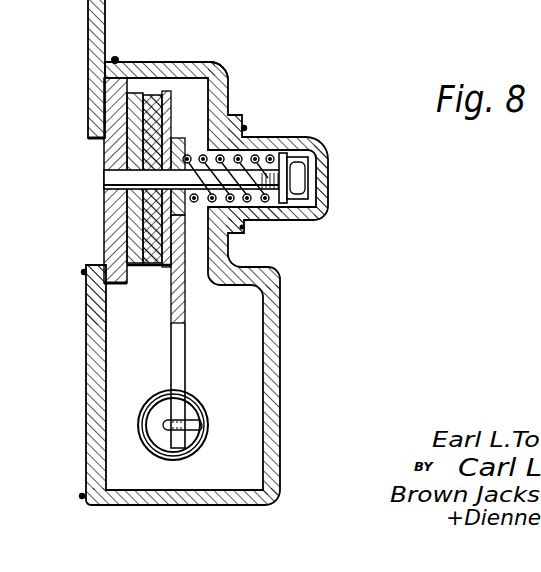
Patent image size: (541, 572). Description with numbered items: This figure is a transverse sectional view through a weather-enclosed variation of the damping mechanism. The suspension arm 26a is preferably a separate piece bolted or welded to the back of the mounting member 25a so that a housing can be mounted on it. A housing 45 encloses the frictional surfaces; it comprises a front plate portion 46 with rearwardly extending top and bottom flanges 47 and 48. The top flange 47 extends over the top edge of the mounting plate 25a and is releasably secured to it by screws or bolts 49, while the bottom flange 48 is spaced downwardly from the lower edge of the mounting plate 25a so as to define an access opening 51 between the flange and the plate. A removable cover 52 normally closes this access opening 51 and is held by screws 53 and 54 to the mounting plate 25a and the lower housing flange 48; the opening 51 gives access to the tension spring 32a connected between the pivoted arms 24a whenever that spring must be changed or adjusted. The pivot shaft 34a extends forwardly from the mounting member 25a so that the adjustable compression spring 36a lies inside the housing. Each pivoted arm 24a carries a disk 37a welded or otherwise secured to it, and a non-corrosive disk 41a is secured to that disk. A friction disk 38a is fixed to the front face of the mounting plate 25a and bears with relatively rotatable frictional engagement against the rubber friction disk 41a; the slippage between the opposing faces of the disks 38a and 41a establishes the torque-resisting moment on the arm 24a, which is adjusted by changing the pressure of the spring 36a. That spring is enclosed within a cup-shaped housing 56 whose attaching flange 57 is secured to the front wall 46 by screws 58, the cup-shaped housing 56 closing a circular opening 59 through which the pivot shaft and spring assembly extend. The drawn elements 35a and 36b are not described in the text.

The pivoted arm 24a is at (182, 348).
The mounting member 25a is at (110, 153).
The suspension arm 26a is at (88, 47).
The tension spring 32a is at (208, 428).
The pivot shaft 34a is at (270, 143).
The end plate 35a is at (290, 162).
The adjustable compression spring 36a is at (320, 217).
The housing lip 36b is at (246, 229).
The disk 37a is at (165, 247).
The friction disk 38a is at (135, 204).
The non-corrosive disk 41a is at (152, 228).
The housing 45 is at (231, 60).
The front plate portion 46 is at (230, 82).
The top flange 47 is at (166, 62).
The bottom flange 48 is at (130, 504).
The screws or bolts 49 is at (118, 57).
The access opening 51 is at (116, 293).
The removable cover 52 is at (93, 292).
The screw 53 is at (82, 272).
The screw 54 is at (80, 494).
The cup-shaped housing 56 is at (330, 178).
The attaching flange 57 is at (237, 121).
The screws 58 is at (247, 128).
The circular opening 59 is at (207, 152).